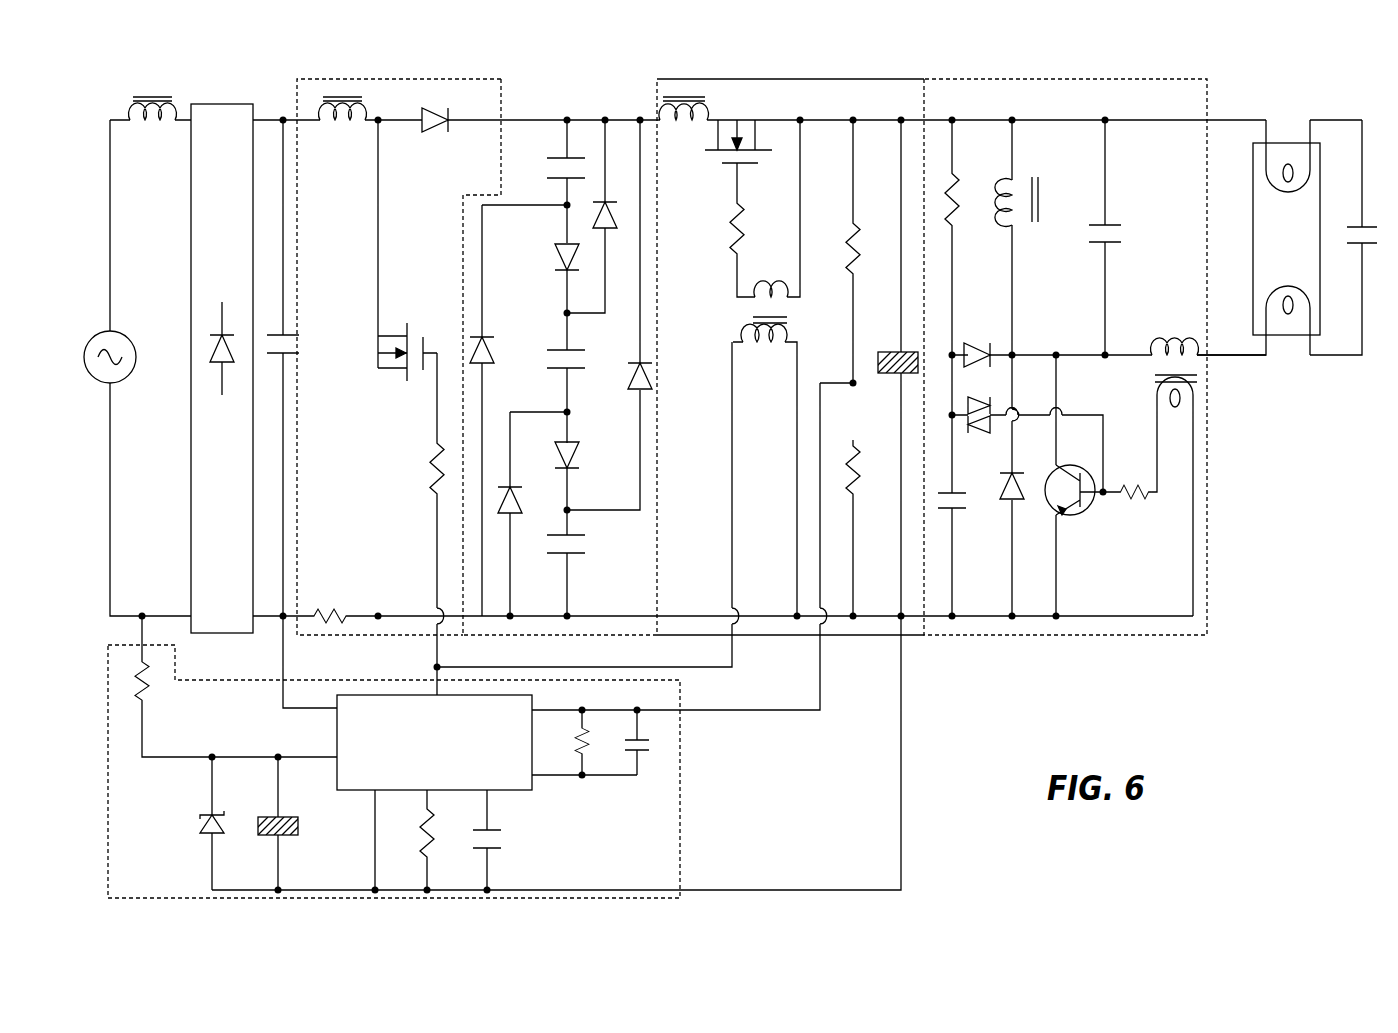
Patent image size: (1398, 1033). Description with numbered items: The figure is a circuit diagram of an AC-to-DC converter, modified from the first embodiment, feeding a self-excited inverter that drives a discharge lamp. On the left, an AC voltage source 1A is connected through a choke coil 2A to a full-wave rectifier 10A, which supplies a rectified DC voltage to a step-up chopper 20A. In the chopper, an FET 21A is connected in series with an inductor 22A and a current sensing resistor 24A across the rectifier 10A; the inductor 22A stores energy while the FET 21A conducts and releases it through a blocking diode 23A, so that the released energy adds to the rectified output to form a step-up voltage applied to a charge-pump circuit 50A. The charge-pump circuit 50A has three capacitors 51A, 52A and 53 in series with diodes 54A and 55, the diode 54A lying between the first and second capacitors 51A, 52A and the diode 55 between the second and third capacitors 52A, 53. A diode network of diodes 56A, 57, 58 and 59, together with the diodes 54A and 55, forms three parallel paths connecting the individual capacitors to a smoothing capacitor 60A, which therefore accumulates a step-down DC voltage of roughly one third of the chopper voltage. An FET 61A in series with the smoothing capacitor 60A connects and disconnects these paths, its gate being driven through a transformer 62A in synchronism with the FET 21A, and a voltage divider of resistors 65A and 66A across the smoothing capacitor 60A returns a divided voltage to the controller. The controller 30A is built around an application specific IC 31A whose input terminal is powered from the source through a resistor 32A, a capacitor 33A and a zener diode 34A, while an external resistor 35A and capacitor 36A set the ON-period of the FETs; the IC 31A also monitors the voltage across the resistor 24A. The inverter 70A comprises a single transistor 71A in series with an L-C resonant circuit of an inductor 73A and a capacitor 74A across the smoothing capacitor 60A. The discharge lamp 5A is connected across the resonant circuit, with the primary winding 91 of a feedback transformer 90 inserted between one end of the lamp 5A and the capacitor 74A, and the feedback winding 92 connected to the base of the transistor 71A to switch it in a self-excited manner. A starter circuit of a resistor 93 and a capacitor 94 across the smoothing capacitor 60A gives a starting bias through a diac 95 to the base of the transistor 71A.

The AC voltage source 1A is at (133, 332).
The choke coil 2A is at (147, 135).
The full-wave rectifier 10A is at (210, 103).
The step-up chopper 20A is at (297, 78).
The FET 21A is at (367, 342).
The inductor 22A is at (345, 137).
The blocking diode 23A is at (427, 143).
The current sensing resistor 24A is at (332, 606).
The controller 30A is at (680, 785).
The application specific IC 31A is at (530, 793).
The resistor 32A is at (148, 702).
The capacitor 33A is at (302, 832).
The zener diode 34A is at (205, 838).
The resistor 35A is at (437, 850).
The capacitor 36A is at (498, 858).
The charge-pump circuit 50A is at (547, 79).
The first capacitor 51A is at (540, 166).
The second capacitor 52A is at (540, 358).
The third capacitor 53 is at (587, 547).
The diode 54A is at (548, 257).
The diode 55 is at (578, 455).
The diode 56A is at (488, 370).
The diode 57 is at (522, 507).
The diode 58 is at (615, 232).
The diode 59 is at (625, 390).
The smoothing capacitor 60A is at (883, 343).
The FET 61A is at (717, 165).
The transformer 62A is at (772, 352).
The resistor 65A is at (840, 240).
The resistor 66A is at (860, 497).
The inverter 70A is at (960, 79).
The transistor 71A is at (1095, 512).
The inductor 73A is at (1027, 227).
The capacitor 74A is at (1120, 230).
The discharge lamp 5A is at (1250, 232).
The feedback transformer 90 is at (1166, 344).
The primary winding 91 is at (1145, 367).
The feedback winding 92 is at (1157, 398).
The resistor 93 is at (963, 203).
The capacitor 94 is at (968, 503).
The diac 95 is at (982, 438).